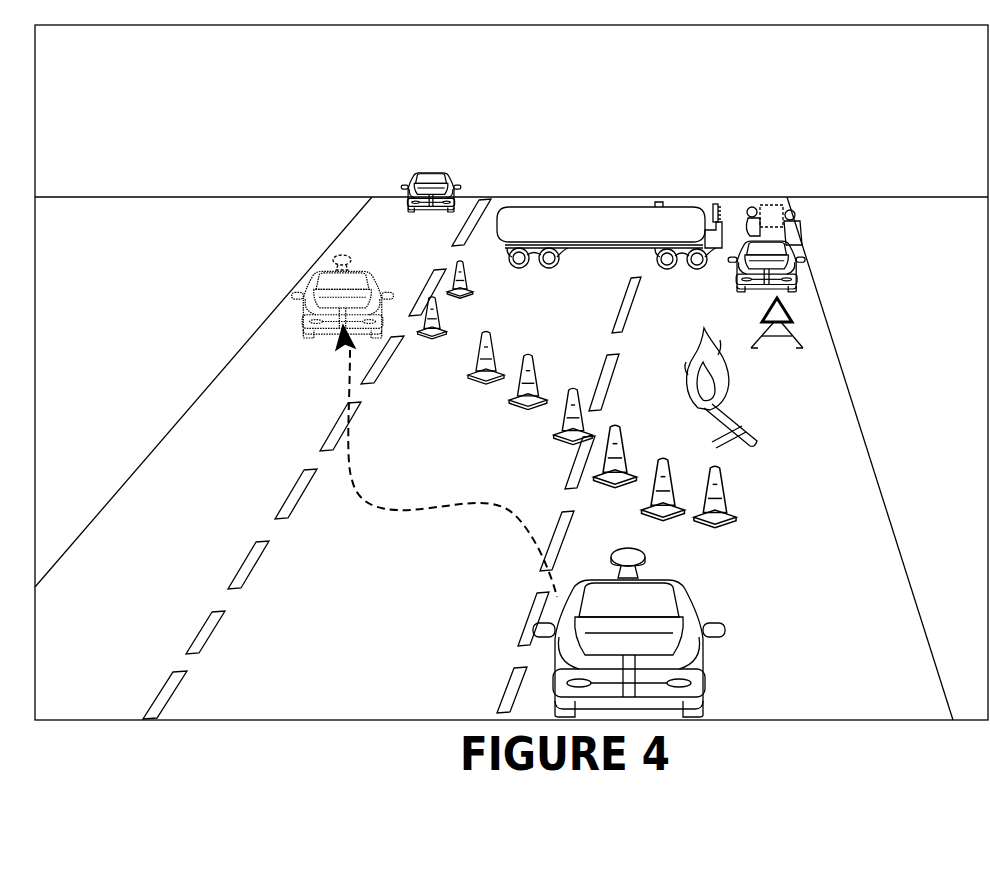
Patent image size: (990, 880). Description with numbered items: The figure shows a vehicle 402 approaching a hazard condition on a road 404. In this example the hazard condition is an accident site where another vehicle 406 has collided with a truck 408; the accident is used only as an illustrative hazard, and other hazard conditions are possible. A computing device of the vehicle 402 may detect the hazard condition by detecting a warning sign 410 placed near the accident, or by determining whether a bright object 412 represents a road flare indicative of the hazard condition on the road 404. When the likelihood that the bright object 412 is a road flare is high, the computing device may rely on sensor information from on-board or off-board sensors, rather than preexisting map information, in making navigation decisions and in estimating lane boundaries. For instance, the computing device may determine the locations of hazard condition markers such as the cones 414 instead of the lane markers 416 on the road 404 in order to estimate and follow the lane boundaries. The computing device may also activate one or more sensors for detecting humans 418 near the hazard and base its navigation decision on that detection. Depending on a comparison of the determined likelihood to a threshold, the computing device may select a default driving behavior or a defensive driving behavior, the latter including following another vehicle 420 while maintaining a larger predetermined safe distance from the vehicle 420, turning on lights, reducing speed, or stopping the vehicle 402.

The vehicle 402 is at (716, 658).
The road 404 is at (206, 386).
The another vehicle 406 is at (736, 277).
The truck 408 is at (512, 263).
The warning sign 410 is at (790, 310).
The bright object 412 is at (740, 424).
The cone 414 is at (472, 377).
The lane markers 416 is at (613, 378).
The humans 418 is at (790, 210).
The vehicle 420 is at (403, 206).